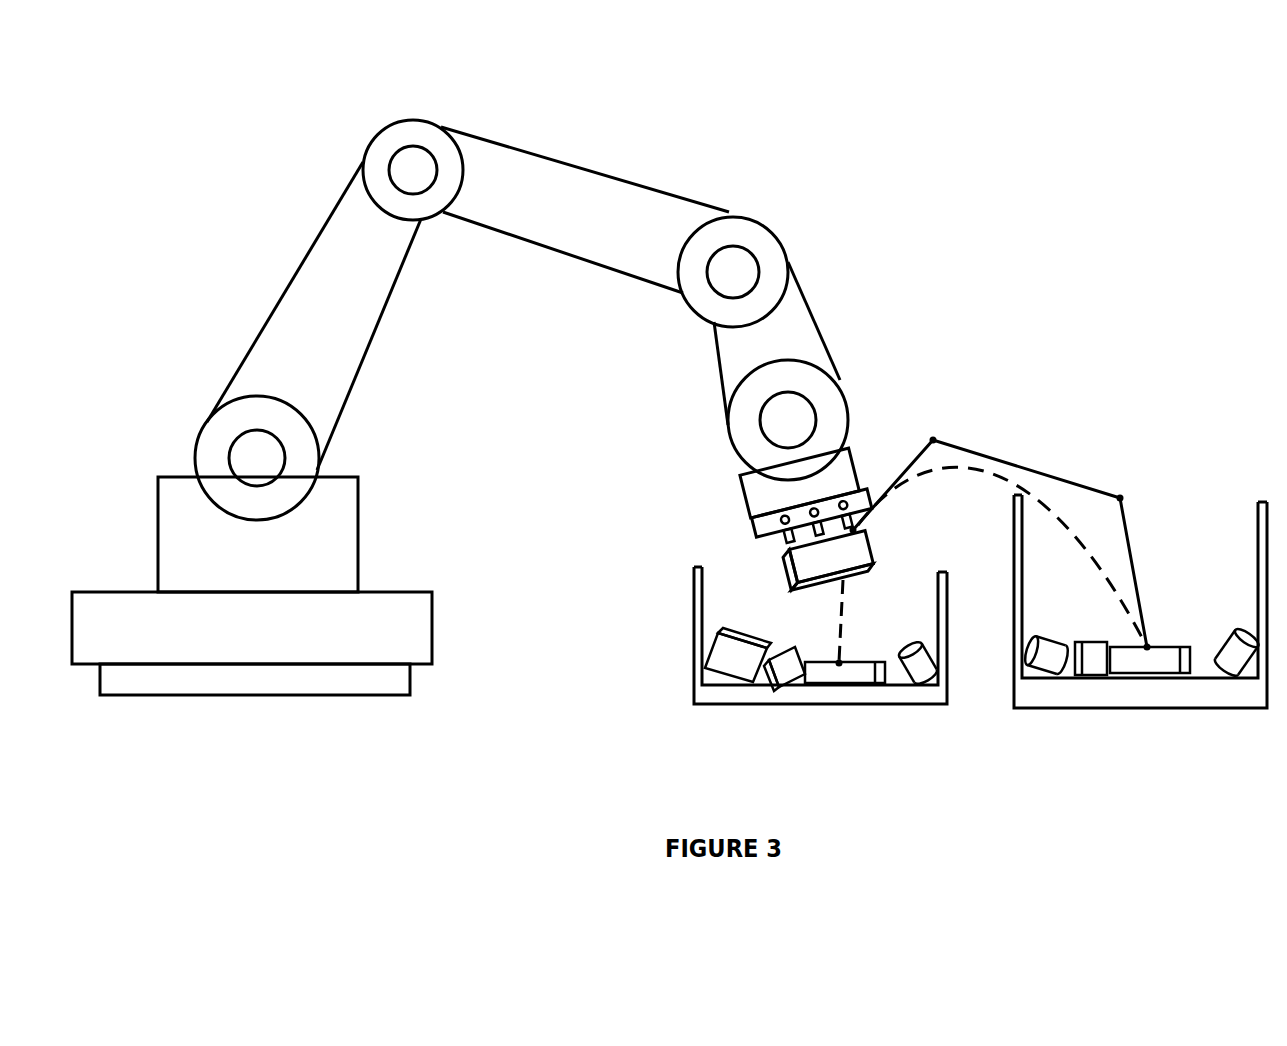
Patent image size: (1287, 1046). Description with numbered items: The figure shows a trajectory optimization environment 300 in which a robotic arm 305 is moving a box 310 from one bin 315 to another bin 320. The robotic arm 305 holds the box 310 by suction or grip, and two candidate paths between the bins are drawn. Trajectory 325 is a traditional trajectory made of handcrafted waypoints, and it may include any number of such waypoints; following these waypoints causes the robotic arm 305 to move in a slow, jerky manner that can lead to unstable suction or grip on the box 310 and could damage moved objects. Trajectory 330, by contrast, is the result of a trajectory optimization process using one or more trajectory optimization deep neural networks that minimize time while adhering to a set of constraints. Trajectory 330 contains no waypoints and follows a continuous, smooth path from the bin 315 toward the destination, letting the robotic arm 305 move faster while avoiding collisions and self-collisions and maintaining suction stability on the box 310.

The trajectory optimization environment 300 is at (218, 74).
The robotic arm 305 is at (296, 248).
The box 310 is at (766, 559).
The bin 315 is at (683, 686).
The bin 320 is at (1003, 689).
The trajectory 325 is at (944, 427).
The trajectory 330 is at (1032, 466).